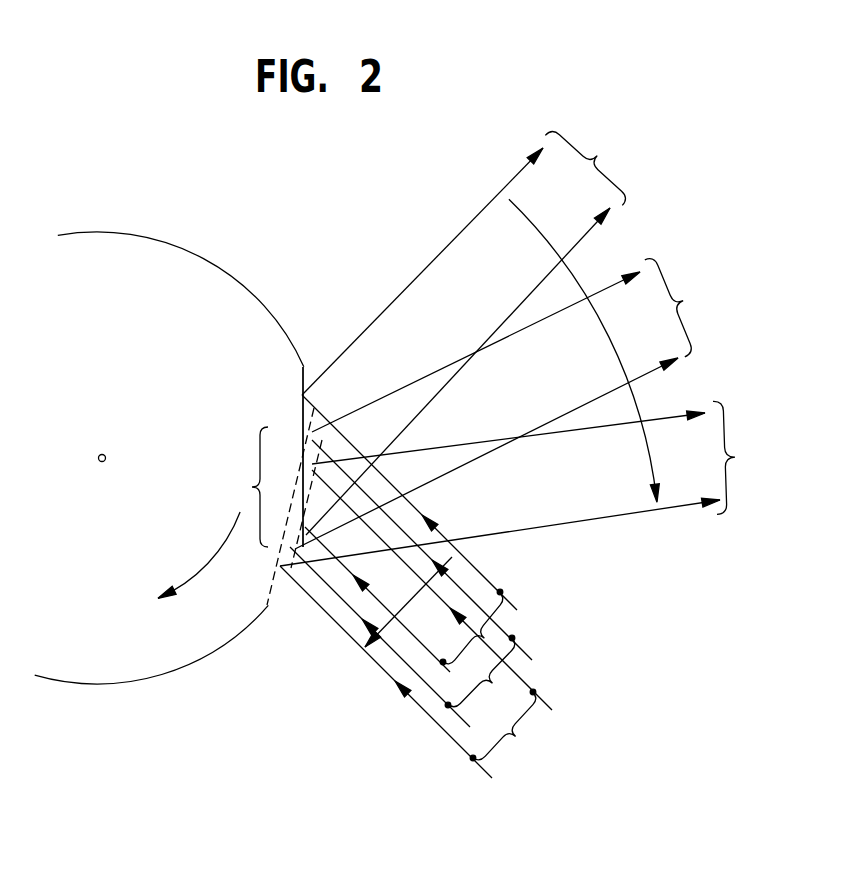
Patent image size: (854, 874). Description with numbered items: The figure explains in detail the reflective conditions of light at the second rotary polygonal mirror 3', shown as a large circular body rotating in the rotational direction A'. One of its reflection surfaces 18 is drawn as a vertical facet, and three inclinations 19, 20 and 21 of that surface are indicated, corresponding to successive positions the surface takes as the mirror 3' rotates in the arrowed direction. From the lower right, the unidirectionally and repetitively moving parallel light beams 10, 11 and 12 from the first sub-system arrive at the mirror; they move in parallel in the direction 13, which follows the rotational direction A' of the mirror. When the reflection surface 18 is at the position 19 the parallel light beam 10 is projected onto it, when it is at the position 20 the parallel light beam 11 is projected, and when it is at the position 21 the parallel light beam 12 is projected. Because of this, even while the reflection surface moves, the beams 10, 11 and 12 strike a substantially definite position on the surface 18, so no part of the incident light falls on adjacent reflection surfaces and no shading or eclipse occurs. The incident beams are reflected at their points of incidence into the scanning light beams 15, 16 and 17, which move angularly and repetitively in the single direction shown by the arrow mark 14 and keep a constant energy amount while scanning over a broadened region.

The second rotary polygonal mirror 3' is at (169, 479).
The rotational direction A' is at (170, 527).
The parallel light beam 10 is at (409, 534).
The parallel light beam 11 is at (411, 583).
The parallel light beam 12 is at (416, 624).
The direction of beam movement 13 is at (420, 590).
The arrow mark 14 is at (608, 343).
The scanning light beam 15 is at (463, 333).
The scanning light beam 16 is at (500, 404).
The scanning light beam 17 is at (521, 483).
The reflection surface 18 is at (246, 487).
The reflection surface position 19 is at (307, 536).
The reflection surface position 20 is at (291, 568).
The reflection surface position 21 is at (273, 594).